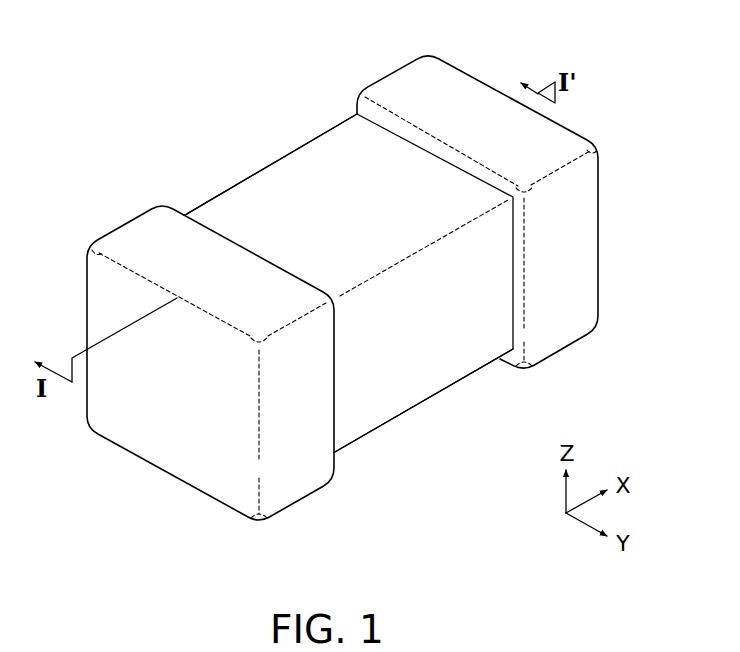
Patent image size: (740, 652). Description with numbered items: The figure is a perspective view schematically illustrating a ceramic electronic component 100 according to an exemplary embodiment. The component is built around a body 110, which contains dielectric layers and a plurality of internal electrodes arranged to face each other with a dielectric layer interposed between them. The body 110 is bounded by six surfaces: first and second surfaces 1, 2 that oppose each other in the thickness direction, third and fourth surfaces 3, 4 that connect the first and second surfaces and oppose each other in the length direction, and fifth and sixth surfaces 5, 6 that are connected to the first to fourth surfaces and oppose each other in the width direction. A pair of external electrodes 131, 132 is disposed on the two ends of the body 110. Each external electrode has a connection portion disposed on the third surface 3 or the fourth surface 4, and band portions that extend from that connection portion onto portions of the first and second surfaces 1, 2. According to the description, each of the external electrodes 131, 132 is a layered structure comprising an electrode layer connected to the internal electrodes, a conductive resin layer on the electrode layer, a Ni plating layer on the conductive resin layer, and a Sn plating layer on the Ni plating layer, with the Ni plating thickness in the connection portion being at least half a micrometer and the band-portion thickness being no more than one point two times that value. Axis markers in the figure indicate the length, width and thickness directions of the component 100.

The ceramic electronic component 100 is at (100, 64).
The body 110 is at (243, 207).
The first surface 1 is at (385, 374).
The second surface 2 is at (360, 170).
The third surface 3 is at (178, 423).
The fourth surface 4 is at (553, 228).
The fifth surface 5 is at (442, 345).
The sixth surface 6 is at (307, 192).
The first external electrode 131 is at (145, 233).
The second external electrode 132 is at (400, 90).